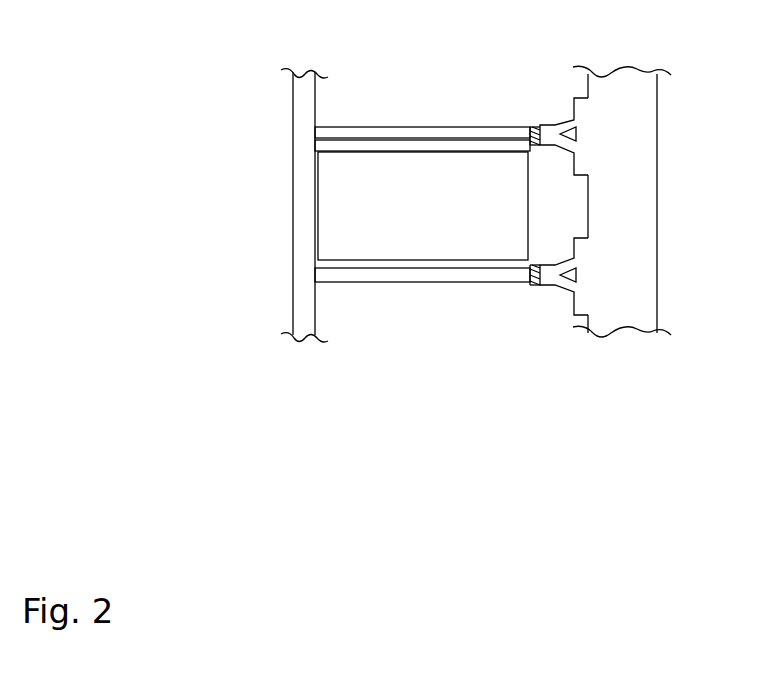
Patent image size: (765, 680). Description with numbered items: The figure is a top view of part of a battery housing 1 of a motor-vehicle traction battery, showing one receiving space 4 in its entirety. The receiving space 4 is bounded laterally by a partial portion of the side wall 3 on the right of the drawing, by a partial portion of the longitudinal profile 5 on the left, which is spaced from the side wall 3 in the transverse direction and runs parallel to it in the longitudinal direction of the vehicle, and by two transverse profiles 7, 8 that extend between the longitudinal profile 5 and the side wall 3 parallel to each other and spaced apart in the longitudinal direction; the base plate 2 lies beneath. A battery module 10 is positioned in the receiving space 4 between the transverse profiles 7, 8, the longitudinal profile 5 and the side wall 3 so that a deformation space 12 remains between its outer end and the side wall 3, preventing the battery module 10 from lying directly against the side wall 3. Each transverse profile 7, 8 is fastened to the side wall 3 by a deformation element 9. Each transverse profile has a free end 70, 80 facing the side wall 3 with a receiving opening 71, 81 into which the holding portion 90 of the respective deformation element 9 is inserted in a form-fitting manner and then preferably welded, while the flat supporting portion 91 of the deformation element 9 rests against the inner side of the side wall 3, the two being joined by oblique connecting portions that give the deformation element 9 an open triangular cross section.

The battery housing 1 is at (238, 263).
The base plate 2 is at (422, 316).
The side wall 3 is at (622, 174).
The receiving space 4 is at (440, 145).
The longitudinal profile 5 is at (300, 136).
The first transverse profile 7 is at (414, 276).
The second transverse profile 8 is at (398, 128).
The deformation element 9 is at (550, 112).
The battery module 10 is at (435, 216).
The deformation space 12 is at (567, 212).
The free end 70 is at (529, 283).
The receiving opening 71 is at (529, 268).
The free end 80 is at (528, 127).
The receiving opening 81 is at (529, 143).
The holding portion 90 is at (524, 135).
The supporting portion 91 is at (580, 157).